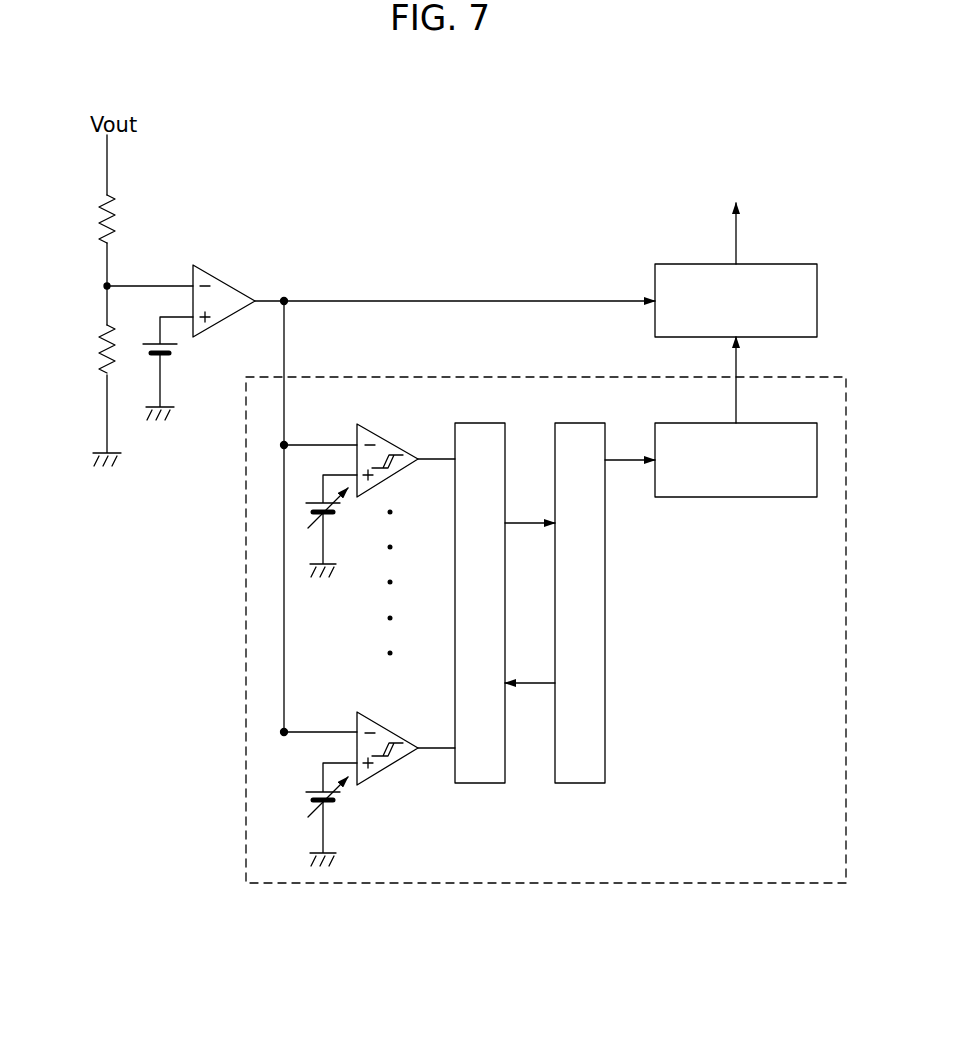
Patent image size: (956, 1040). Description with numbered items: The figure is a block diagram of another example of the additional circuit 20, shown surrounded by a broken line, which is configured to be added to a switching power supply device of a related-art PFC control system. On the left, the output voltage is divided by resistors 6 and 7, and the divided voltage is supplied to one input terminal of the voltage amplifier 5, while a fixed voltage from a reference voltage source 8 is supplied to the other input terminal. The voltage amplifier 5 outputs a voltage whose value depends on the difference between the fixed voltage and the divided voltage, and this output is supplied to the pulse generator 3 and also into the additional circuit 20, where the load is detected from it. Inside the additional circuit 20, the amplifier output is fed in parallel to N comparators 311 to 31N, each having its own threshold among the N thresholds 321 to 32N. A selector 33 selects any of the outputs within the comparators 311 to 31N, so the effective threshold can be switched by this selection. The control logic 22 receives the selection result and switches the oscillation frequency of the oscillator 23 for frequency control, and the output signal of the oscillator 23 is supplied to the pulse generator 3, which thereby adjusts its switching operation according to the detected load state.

The pulse generator 3 is at (770, 264).
The voltage amplifier 5 is at (218, 272).
The resistor 6 is at (98, 207).
The resistor 7 is at (98, 337).
The reference voltage source 8 is at (171, 352).
The additional circuit 20 is at (466, 376).
The control logic 22 is at (580, 423).
The oscillator 23 is at (755, 423).
The comparator 311 is at (382, 436).
The comparator 31N is at (382, 724).
The threshold 321 is at (338, 507).
The threshold 32N is at (338, 796).
The selector 33 is at (480, 423).